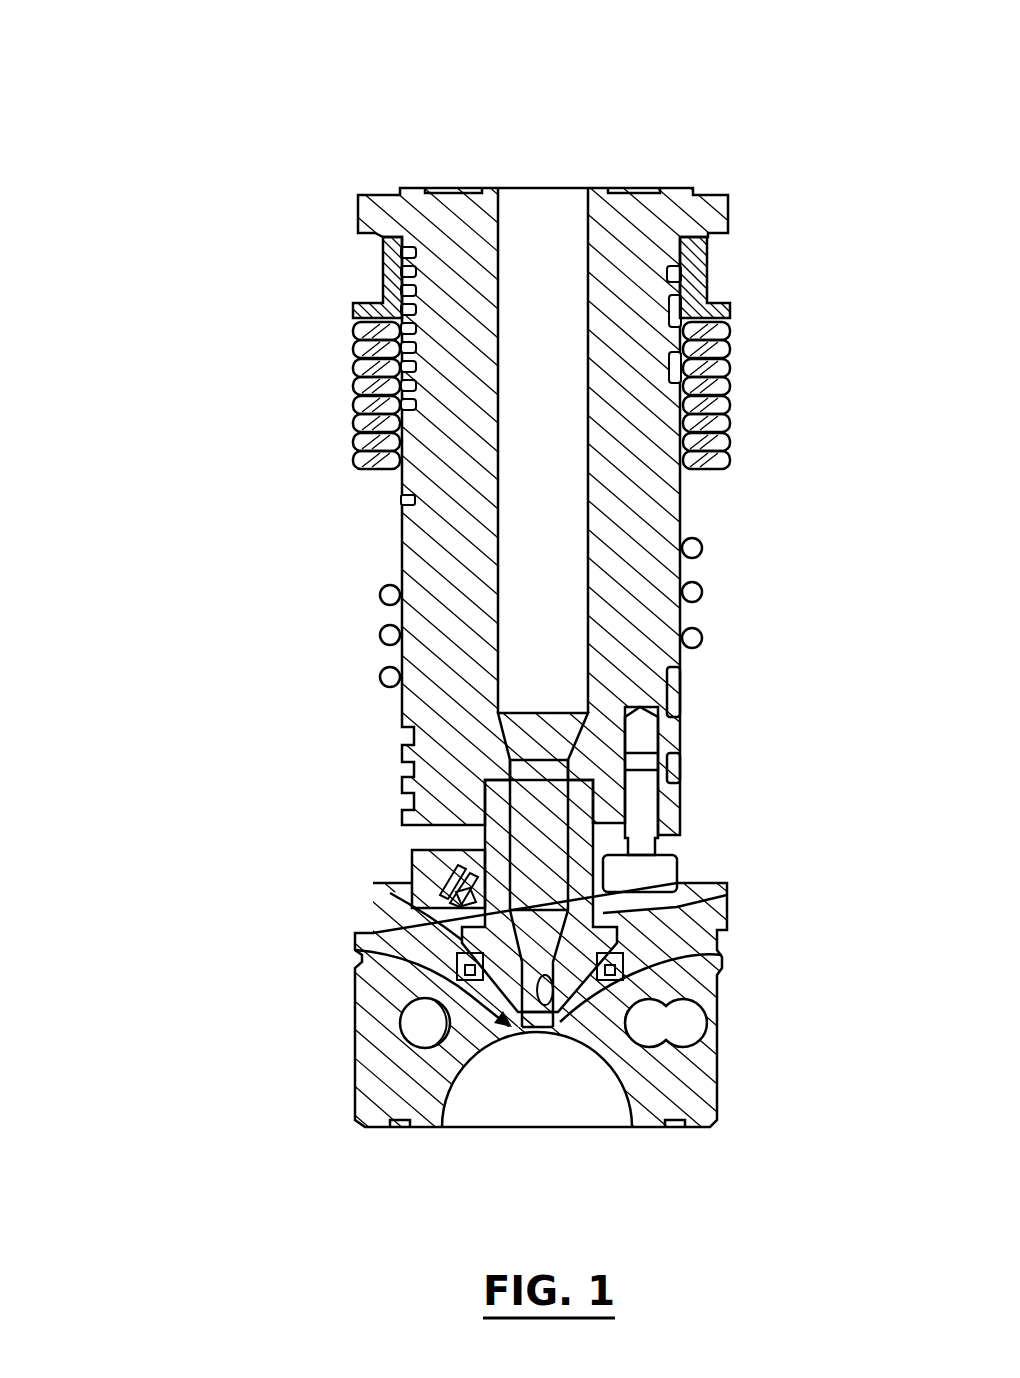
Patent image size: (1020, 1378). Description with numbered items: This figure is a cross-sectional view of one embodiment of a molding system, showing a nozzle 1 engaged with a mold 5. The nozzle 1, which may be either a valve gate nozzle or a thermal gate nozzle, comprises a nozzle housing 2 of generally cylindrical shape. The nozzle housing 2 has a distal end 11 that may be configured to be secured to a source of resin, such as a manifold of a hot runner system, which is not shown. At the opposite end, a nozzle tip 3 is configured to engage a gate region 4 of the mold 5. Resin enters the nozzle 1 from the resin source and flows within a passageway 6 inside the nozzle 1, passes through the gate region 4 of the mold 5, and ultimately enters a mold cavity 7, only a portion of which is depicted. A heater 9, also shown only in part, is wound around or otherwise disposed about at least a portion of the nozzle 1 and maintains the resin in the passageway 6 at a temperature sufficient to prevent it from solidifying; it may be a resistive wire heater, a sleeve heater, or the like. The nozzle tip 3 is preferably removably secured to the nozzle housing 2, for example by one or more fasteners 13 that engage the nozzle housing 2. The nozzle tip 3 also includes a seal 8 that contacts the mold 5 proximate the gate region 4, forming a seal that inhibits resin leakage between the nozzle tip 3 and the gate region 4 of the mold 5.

The nozzle 1 is at (242, 417).
The nozzle housing 2 is at (680, 515).
The nozzle tip 3 is at (407, 857).
The gate region 4 is at (360, 950).
The mold 5 is at (725, 895).
The passageway 6 is at (560, 250).
The mold cavity 7 is at (567, 1087).
The seal 8 is at (717, 990).
The heater 9 is at (702, 637).
The distal end 11 is at (342, 128).
The fasteners 13 is at (655, 792).